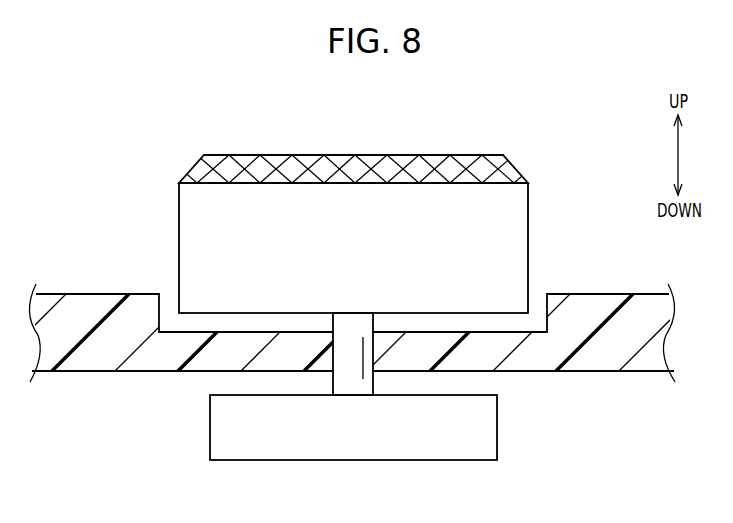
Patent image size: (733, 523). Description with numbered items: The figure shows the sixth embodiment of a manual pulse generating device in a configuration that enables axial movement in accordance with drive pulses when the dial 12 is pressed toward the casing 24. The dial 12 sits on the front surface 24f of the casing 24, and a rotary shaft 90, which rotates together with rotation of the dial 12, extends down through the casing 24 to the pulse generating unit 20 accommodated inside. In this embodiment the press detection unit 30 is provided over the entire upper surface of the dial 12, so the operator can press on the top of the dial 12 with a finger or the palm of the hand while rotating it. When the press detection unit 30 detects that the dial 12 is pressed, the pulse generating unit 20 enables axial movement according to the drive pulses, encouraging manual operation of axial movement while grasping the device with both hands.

The dial 12 is at (188, 218).
The pulse generating unit 20 is at (497, 435).
The casing 24 is at (77, 308).
The front surface 24f is at (593, 294).
The press detection unit 30 is at (321, 167).
The rotary shaft 90 is at (347, 353).